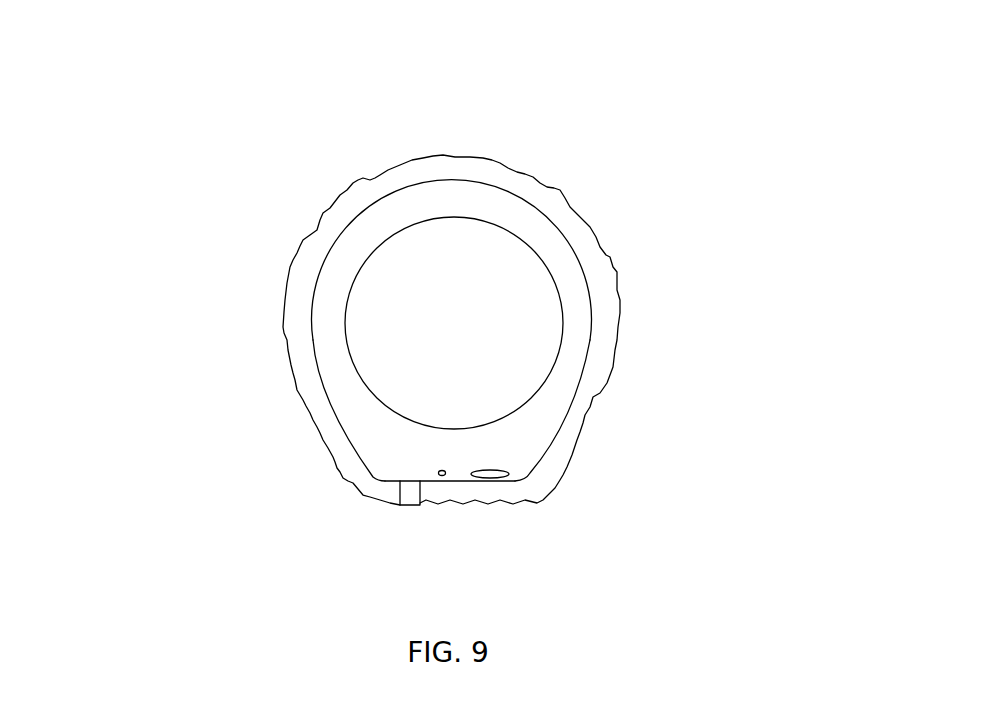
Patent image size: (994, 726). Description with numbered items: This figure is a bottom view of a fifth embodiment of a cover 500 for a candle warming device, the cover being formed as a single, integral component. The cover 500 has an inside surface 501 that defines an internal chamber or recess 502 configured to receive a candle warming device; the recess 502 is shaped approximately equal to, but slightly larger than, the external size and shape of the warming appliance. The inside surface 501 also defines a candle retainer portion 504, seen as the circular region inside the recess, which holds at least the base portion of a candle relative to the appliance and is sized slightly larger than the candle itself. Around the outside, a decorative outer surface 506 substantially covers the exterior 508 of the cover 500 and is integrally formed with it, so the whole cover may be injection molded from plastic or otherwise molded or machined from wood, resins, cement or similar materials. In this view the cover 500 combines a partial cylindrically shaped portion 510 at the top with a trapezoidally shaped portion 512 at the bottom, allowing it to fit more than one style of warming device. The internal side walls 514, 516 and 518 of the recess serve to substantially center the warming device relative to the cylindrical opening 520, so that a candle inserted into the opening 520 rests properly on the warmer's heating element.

The cover 500 is at (486, 280).
The inside surface 501 is at (350, 390).
The internal chamber or recess 502 is at (439, 333).
The candle retainer portion 504 is at (347, 313).
The decorative outer surface 506 is at (343, 480).
The exterior 508 is at (380, 175).
The partial cylindrically shaped portion 510 is at (530, 230).
The trapezoidally shaped portion 512 is at (507, 463).
The internal side wall 514 is at (328, 258).
The internal side wall 516 is at (353, 437).
The internal side wall 518 is at (583, 375).
The cylindrical opening 520 is at (487, 413).